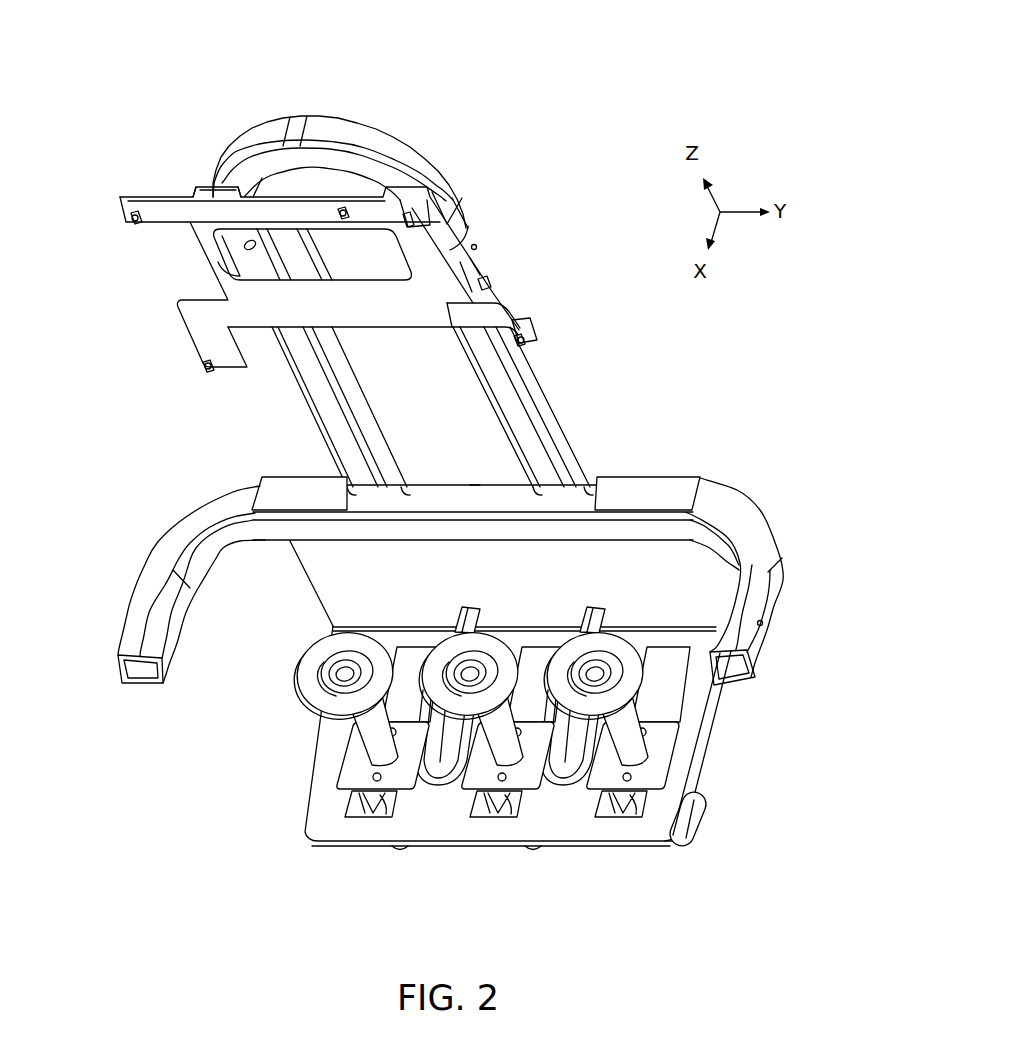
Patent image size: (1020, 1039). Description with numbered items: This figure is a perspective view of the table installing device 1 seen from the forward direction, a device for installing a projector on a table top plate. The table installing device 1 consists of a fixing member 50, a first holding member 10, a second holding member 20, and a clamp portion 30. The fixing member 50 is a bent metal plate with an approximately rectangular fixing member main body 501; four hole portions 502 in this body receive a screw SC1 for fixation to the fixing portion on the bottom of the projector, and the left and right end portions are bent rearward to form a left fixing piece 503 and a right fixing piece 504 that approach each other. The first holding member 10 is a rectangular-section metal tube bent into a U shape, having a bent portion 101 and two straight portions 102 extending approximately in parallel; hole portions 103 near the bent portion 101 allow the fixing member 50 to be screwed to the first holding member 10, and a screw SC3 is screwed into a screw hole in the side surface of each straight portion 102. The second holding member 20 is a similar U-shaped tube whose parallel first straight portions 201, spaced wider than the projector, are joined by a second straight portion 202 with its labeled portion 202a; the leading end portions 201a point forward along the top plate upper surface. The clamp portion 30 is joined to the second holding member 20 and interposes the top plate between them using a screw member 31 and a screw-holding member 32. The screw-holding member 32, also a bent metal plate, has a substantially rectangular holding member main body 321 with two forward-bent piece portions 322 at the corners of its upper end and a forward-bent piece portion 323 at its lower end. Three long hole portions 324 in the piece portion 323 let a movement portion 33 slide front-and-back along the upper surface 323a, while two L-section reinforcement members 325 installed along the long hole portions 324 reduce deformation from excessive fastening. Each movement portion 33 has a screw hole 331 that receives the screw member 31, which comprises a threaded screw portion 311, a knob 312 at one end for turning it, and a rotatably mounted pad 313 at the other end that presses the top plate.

The table installing device 1 is at (444, 468).
The first holding member 10 is at (460, 411).
The second holding member 20 is at (444, 568).
The clamp portion 30 is at (491, 730).
The screw member 31 is at (537, 728).
The screw-holding member 32 is at (501, 730).
The movement portion 33 is at (501, 773).
The fixing member 50 is at (334, 239).
The bent portion 101 is at (268, 125).
The straight portions 102 is at (529, 368).
The hole portions 103 is at (246, 245).
The first straight portions 201 is at (140, 612).
The leading end portion 201a is at (140, 683).
The second straight portion 202 is at (425, 497).
The beam top surface 202a is at (480, 497).
The screw portion 311 is at (641, 746).
The knob 312 is at (698, 822).
The pad 313 is at (628, 680).
The holding member main body 321 is at (327, 594).
The piece portions 322 is at (290, 490).
The piece portion 323 is at (645, 838).
The upper surface 323a is at (682, 838).
The long hole portions 324 is at (362, 818).
The reinforcement members 325 is at (437, 786).
The screw hole 331 is at (388, 762).
The fixing member main body 501 is at (324, 205).
The hole portions 502 is at (343, 210).
The fixing piece 503 is at (199, 190).
The fixing piece 504 is at (452, 250).
The screw SC1 is at (130, 216).
The screw SC3 is at (480, 248).